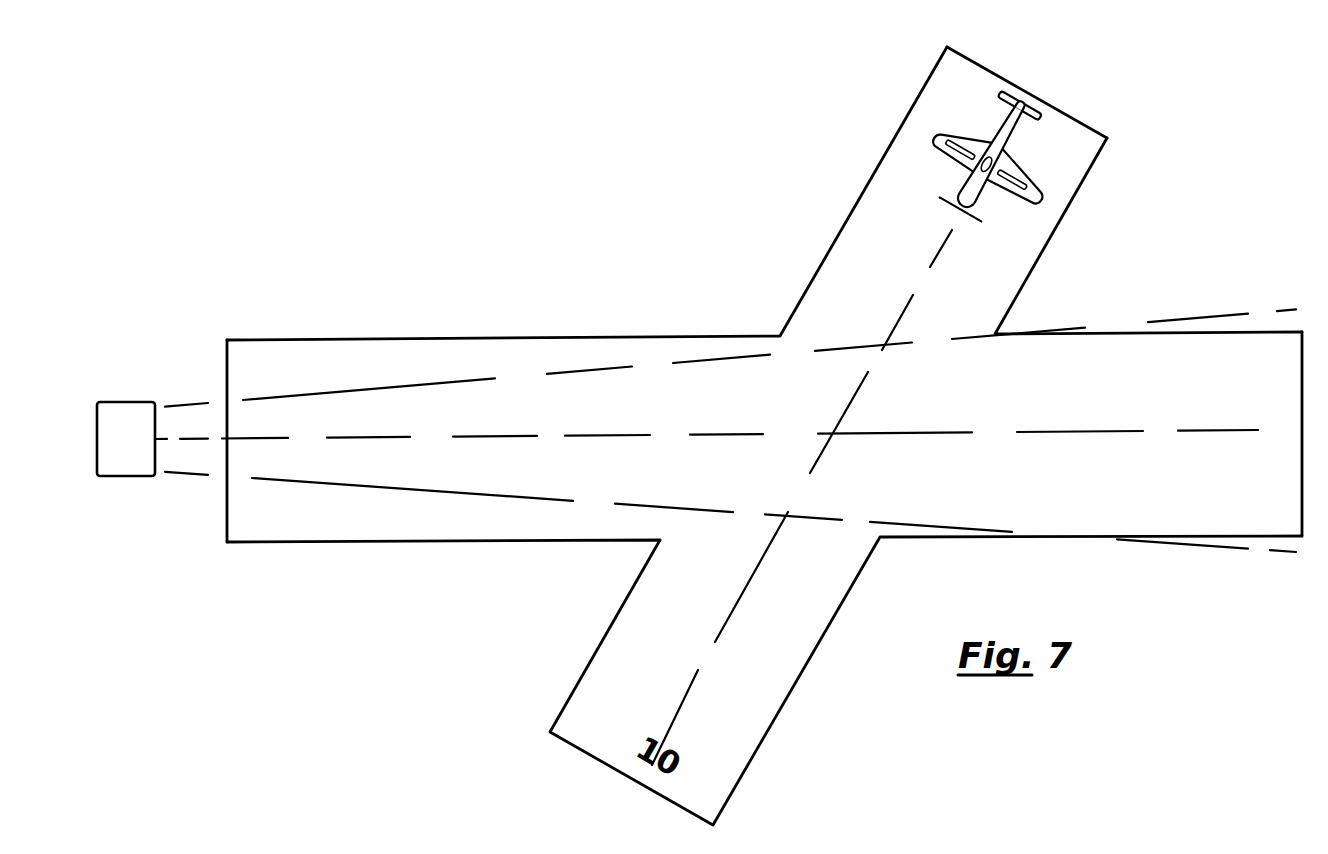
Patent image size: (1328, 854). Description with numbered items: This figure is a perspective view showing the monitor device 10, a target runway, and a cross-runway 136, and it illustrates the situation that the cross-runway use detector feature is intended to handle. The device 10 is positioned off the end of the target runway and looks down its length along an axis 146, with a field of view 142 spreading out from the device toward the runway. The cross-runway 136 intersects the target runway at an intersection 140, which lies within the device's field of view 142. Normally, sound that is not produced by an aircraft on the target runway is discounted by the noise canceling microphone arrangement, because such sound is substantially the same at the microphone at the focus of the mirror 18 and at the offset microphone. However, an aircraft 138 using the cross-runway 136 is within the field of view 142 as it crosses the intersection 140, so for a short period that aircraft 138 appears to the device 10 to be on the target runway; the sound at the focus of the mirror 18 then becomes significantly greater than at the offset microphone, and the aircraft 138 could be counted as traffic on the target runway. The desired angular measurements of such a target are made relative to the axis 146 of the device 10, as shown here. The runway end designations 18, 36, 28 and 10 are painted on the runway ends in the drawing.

The device 10 is at (123, 402).
The mirror 18 is at (247, 441).
The runway 36 end 36 is at (1283, 434).
The runway 28 end 28 is at (1011, 120).
The cross-runway 136 is at (857, 247).
The aircraft 138 is at (947, 157).
The intersection 140 is at (826, 415).
The field of view 142 is at (178, 405).
The axis 146 is at (193, 441).